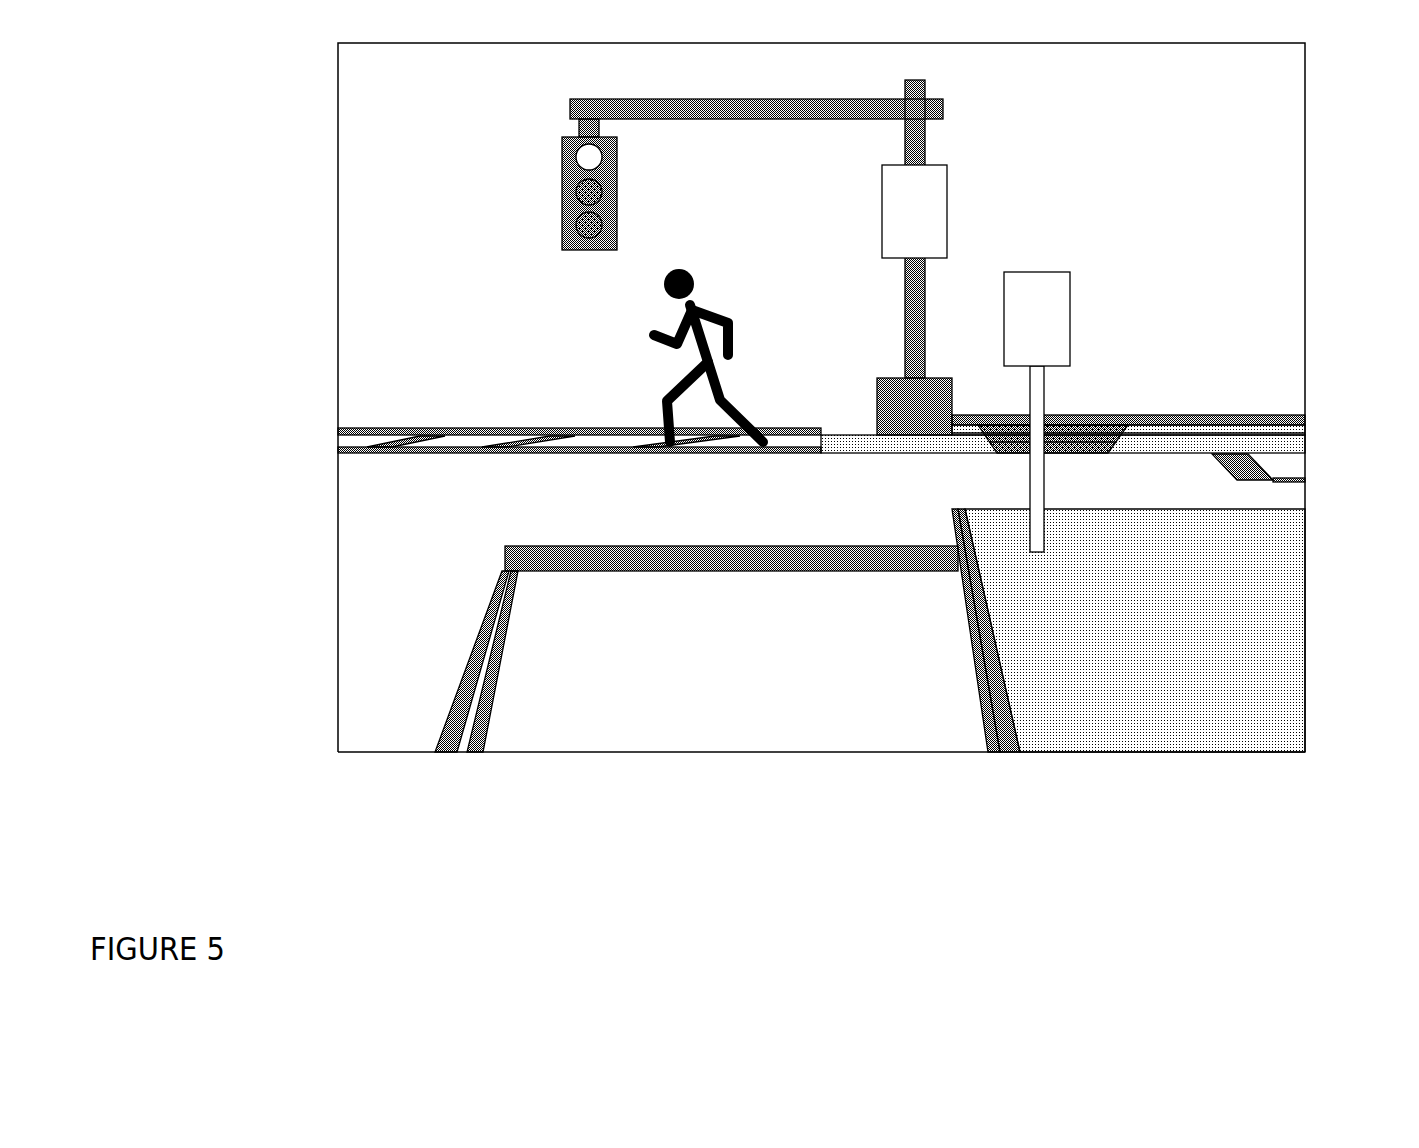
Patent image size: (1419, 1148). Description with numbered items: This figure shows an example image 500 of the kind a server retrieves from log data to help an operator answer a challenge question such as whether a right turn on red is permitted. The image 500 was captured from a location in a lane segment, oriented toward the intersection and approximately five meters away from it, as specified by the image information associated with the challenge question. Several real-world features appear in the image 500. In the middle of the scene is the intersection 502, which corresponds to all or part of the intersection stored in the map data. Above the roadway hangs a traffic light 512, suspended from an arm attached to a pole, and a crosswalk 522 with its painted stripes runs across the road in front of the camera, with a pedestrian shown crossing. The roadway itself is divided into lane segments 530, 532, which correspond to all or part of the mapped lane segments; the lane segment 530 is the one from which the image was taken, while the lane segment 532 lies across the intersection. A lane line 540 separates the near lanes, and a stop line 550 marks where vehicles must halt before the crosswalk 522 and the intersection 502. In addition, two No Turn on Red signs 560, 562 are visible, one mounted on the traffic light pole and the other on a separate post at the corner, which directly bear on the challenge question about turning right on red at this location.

The image 500 is at (774, 474).
The intersection 502 is at (821, 397).
The traffic light 512 is at (560, 213).
The crosswalk 522 is at (547, 432).
The lane segment 530 is at (735, 720).
The lane segment 532 is at (1293, 492).
The lane line 540 is at (503, 662).
The stop line 550 is at (503, 557).
The No Turn on Red sign 560 is at (948, 213).
The No Turn on Red sign 562 is at (1072, 325).